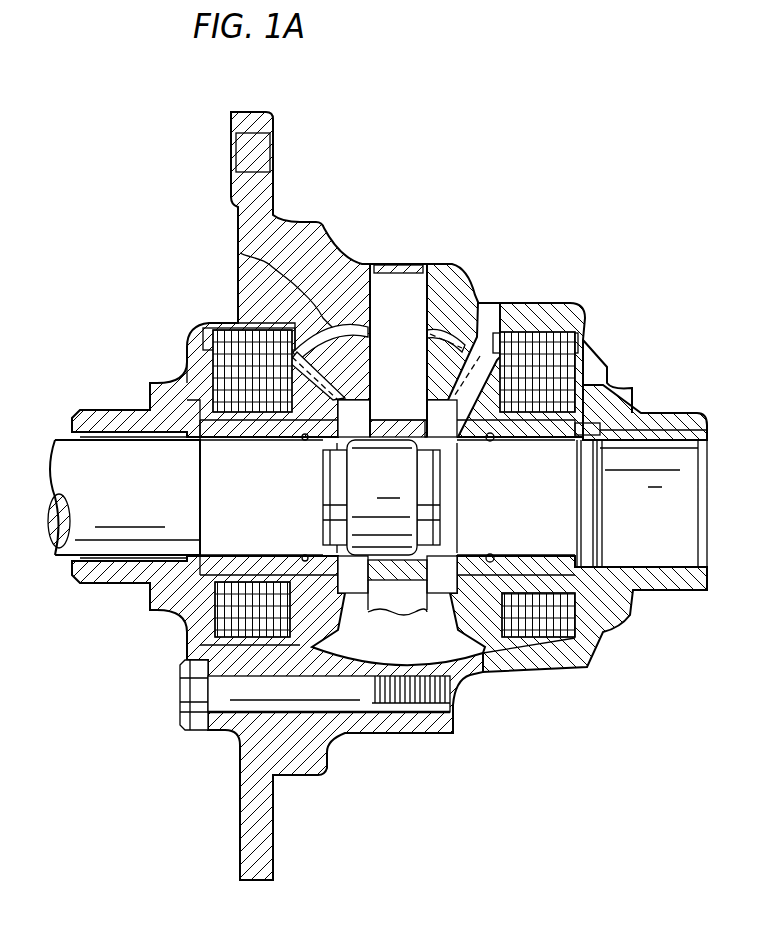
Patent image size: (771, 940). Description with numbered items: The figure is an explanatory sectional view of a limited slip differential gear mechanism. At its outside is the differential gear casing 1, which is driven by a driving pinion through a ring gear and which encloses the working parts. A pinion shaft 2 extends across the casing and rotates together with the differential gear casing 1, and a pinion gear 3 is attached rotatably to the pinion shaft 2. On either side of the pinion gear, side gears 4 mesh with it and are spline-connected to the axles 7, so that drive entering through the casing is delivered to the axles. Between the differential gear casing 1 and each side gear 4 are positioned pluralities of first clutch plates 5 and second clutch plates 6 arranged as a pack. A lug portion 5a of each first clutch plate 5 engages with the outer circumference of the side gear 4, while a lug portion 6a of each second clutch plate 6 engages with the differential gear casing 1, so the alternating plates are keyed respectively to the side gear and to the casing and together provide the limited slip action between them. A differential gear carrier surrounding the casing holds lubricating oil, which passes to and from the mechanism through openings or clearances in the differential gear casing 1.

The differential gear casing 1 is at (102, 412).
The pinion shaft 2 is at (405, 290).
The pinion gear 3 is at (450, 347).
The side gears 4 is at (276, 428).
The first clutch plates 5 is at (213, 395).
The lug portion 5a is at (197, 377).
The second clutch plates 6 is at (213, 348).
The lug portion 6a is at (232, 332).
The axles 7 is at (120, 536).